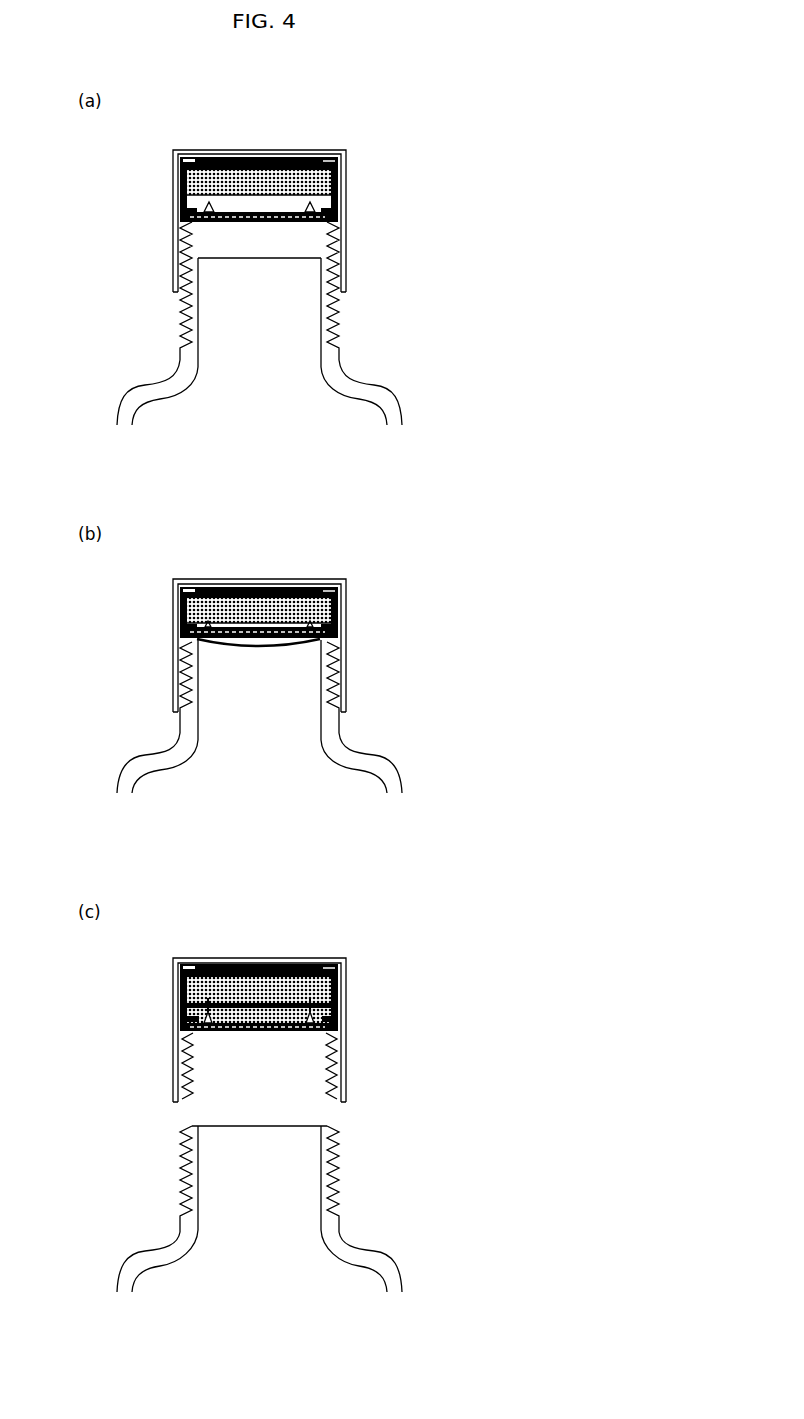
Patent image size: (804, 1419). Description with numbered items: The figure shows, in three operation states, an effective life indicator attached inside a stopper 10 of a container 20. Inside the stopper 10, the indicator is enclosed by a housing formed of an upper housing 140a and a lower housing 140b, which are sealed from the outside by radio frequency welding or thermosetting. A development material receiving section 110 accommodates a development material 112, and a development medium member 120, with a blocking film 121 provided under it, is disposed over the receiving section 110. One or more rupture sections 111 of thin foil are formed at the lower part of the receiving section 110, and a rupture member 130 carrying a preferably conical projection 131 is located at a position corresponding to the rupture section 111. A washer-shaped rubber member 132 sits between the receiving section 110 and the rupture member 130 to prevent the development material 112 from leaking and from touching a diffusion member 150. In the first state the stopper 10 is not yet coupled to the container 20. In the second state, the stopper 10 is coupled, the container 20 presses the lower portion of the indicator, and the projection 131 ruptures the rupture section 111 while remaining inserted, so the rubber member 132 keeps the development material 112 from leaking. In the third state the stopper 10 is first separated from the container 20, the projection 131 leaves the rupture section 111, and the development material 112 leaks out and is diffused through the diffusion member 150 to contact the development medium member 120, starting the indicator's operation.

The stopper 10 is at (207, 150).
The container 20 is at (362, 380).
The development material receiving section 110 is at (338, 168).
The rupture section 111 is at (340, 184).
The development material 112 is at (224, 180).
The development medium member 120 is at (331, 158).
The blocking film 121 is at (311, 160).
The rupture member 130 is at (222, 222).
The projection 131 is at (205, 204).
The rubber member 132 is at (338, 211).
The upper housing 140a is at (181, 166).
The lower housing 140b is at (181, 199).
The diffusion member 150 is at (338, 200).